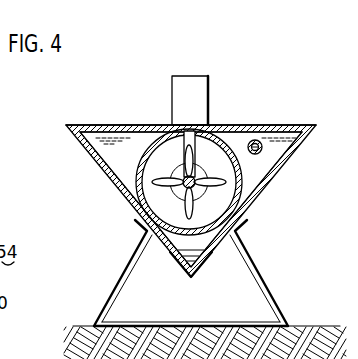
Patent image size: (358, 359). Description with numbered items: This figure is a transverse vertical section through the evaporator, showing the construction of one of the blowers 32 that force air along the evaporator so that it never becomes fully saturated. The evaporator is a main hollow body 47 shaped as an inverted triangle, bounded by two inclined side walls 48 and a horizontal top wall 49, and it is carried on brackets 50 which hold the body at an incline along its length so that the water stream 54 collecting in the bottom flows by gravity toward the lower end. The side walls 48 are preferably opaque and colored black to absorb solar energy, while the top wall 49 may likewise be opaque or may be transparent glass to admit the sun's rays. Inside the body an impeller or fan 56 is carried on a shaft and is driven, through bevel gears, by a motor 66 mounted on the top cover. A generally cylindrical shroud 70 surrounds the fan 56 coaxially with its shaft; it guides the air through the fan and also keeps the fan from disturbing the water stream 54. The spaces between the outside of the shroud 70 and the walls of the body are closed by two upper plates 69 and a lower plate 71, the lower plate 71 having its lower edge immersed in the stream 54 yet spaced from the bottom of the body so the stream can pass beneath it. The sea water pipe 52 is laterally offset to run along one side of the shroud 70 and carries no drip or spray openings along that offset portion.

The blower 32 is at (207, 152).
The main hollow body 47 is at (152, 134).
The inclined side wall 48 is at (122, 197).
The top wall 49 is at (113, 125).
The bracket 50 is at (252, 260).
The sea water pipe 52 is at (258, 140).
The water stream 54 is at (202, 252).
The impeller or fan 56 is at (137, 190).
The motor 66 is at (208, 92).
The upper plate 69 is at (102, 142).
The cylindrical shroud 70 is at (253, 211).
The lower plate 71 is at (177, 248).